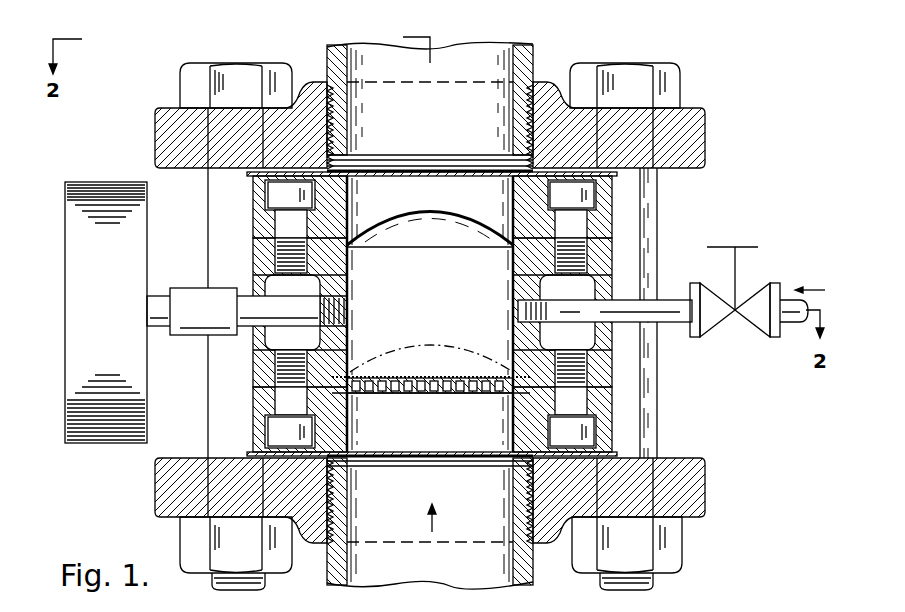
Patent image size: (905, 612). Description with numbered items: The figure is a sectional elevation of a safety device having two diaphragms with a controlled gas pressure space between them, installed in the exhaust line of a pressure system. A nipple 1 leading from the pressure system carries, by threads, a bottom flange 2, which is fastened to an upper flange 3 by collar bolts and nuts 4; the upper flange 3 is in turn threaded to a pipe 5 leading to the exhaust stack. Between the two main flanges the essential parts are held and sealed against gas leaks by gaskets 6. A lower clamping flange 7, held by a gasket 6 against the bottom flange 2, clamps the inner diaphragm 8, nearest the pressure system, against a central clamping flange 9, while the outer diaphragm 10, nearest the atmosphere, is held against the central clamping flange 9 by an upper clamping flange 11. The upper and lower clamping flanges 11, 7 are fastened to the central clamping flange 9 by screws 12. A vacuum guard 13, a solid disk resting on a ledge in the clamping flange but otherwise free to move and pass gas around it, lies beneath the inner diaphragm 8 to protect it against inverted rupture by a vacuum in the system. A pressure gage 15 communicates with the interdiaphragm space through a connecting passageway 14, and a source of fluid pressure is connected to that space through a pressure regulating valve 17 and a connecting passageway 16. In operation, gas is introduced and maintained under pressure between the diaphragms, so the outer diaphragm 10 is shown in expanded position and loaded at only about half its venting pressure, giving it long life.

The nipple 1 is at (533, 572).
The bottom flange 2 is at (708, 492).
The upper flange 3 is at (708, 136).
The collar bolts and nuts 4 is at (180, 78).
The pipe 5 is at (533, 52).
The gaskets 6 is at (613, 440).
The lower clamping flange 7 is at (515, 421).
The inner diaphragm 8 is at (458, 378).
The central clamping flange 9 is at (515, 276).
The diaphragm 10 is at (460, 226).
The upper clamping flange 11 is at (513, 195).
The screws 12 is at (592, 195).
The vacuum guard 13 is at (422, 393).
The connecting passageway 14 is at (258, 332).
The pressure gage 15 is at (100, 445).
The connecting passageway 16 is at (672, 324).
The pressure regulating valve 17 is at (752, 325).